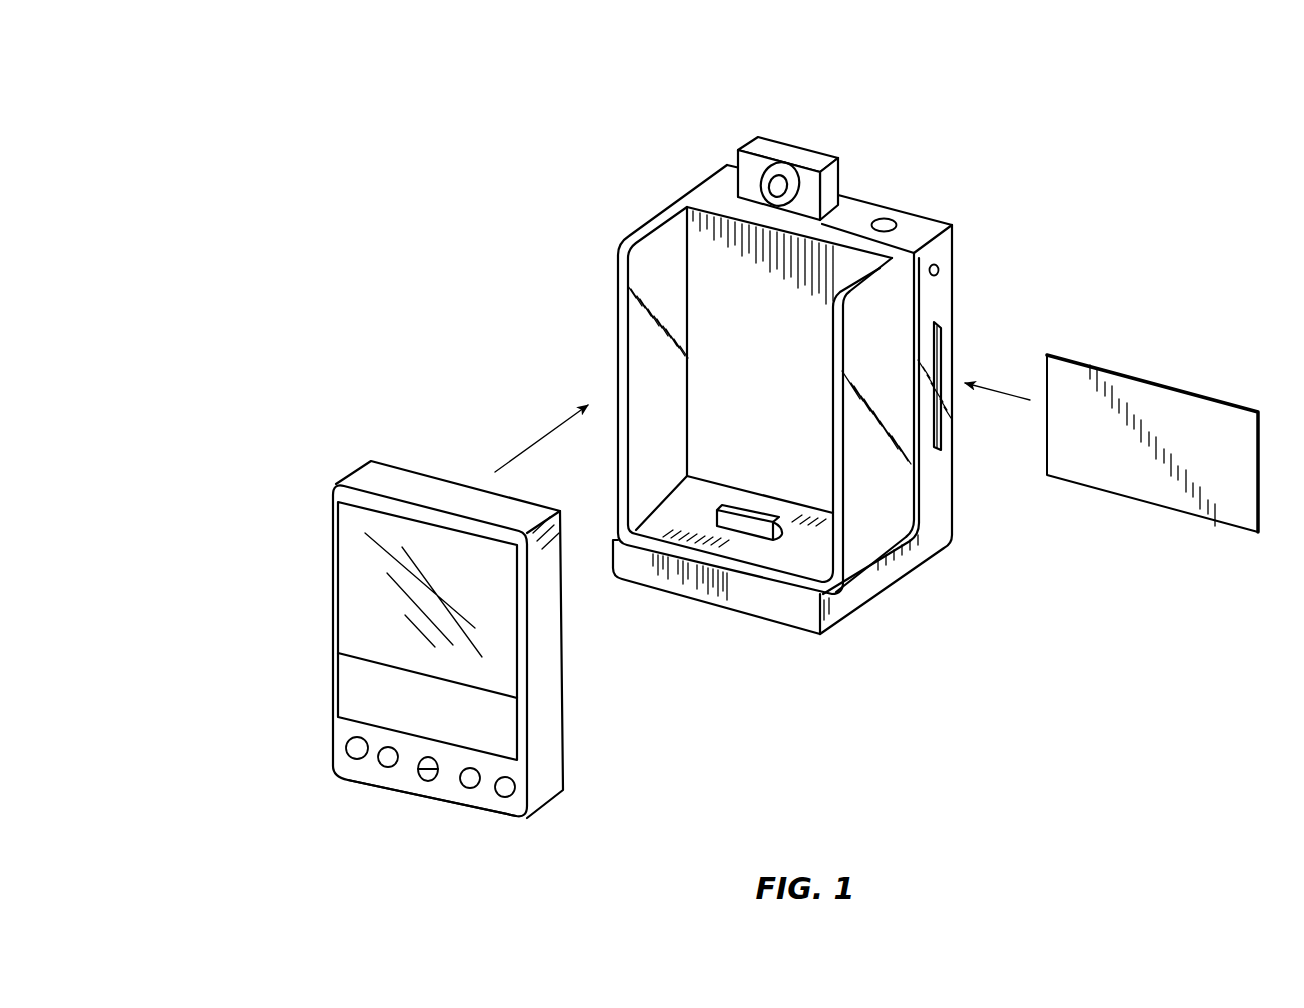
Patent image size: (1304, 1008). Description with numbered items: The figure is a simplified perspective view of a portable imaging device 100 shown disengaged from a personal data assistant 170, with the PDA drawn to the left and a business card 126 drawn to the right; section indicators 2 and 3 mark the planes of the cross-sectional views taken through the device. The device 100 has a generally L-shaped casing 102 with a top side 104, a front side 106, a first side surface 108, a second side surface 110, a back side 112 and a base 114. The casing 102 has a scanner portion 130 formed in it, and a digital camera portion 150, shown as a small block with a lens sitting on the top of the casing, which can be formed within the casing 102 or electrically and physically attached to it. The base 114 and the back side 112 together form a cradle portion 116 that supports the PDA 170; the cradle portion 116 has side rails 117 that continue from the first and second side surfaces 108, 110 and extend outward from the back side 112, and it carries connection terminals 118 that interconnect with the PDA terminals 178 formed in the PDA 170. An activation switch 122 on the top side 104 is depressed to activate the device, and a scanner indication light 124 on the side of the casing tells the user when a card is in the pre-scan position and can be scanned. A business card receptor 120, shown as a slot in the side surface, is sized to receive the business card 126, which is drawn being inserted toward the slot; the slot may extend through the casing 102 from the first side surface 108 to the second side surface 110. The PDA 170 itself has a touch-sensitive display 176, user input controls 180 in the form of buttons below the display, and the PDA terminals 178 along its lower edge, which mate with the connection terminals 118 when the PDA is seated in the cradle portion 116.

The portable imaging device 100 is at (1068, 594).
The casing 102 is at (948, 537).
The top side 104 is at (922, 226).
The front side 106 is at (957, 312).
The first side surface 108 is at (942, 248).
The second side surface 110 is at (710, 177).
The back side 112 is at (722, 272).
The base 114 is at (917, 562).
The cradle portion 116 is at (792, 556).
The side rails 117 is at (645, 235).
The connection terminals 118 is at (750, 517).
The business card receptor 120 is at (942, 358).
The activation switch 122 is at (884, 217).
The scanner indication light 124 is at (940, 270).
The business card 126 is at (1228, 412).
The scanner portion 130 is at (970, 452).
The digital camera portion 150 is at (806, 142).
The personal data assistant 170 is at (286, 685).
The display 176 is at (343, 590).
The PDA terminals 178 is at (421, 812).
The user input controls 180 is at (377, 771).
The section line 2- 2 is at (784, 45).
The section line 3- 3 is at (938, 80).